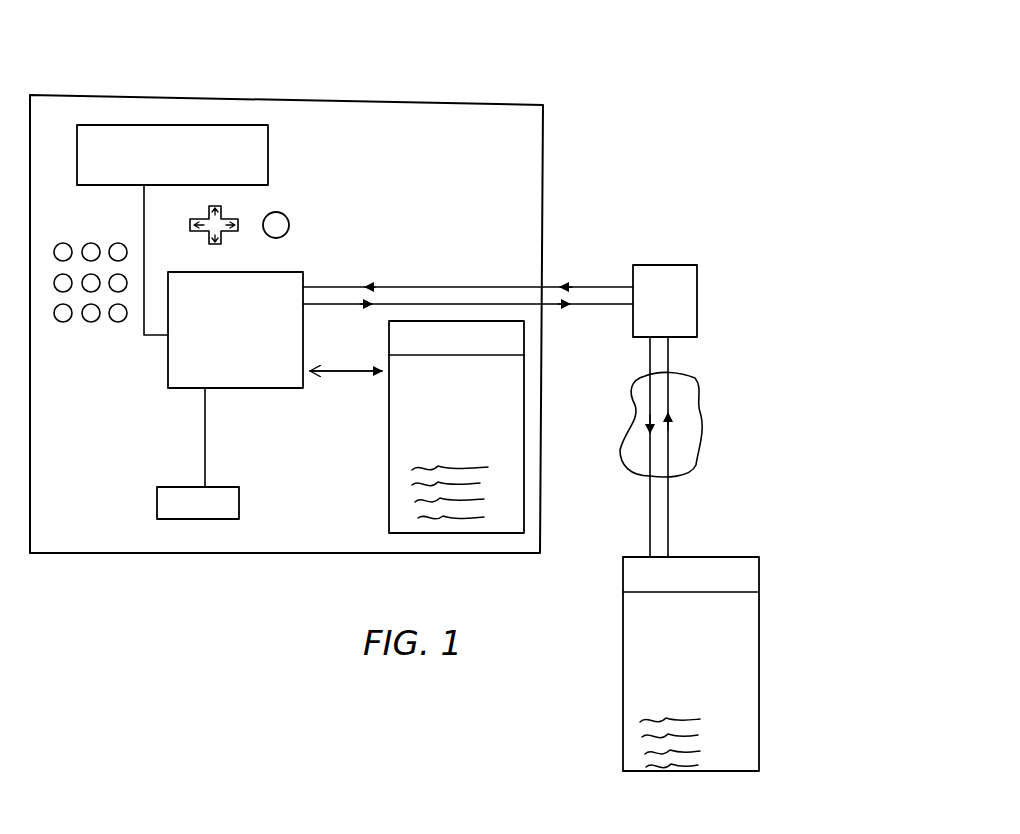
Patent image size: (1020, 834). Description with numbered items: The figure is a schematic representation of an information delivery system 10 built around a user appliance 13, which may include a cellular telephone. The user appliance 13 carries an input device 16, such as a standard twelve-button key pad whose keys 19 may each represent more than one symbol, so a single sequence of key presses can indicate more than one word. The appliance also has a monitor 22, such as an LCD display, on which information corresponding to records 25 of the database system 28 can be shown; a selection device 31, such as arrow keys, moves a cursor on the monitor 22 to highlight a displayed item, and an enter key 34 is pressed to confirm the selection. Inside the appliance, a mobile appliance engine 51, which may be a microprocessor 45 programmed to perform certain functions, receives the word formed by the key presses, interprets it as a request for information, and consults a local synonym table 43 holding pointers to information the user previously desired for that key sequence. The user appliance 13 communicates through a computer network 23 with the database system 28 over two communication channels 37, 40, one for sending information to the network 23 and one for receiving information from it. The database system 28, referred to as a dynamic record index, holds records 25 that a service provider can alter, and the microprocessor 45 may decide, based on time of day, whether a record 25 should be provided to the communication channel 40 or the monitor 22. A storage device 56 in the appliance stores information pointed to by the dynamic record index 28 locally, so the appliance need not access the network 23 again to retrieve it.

The information delivery system 10 is at (588, 112).
The user appliance 13 is at (476, 103).
The monitor 22 is at (270, 143).
The keys 19 is at (91, 243).
The input device 16 is at (82, 373).
The selection device 31 is at (197, 236).
The enter key 34 is at (290, 220).
The mobile appliance engine 51 is at (262, 390).
The storage device 56 is at (157, 509).
The communication channel 40 is at (440, 286).
The communication channel 37 is at (333, 306).
The local synonym table 43 is at (389, 490).
The microprocessor 45 is at (700, 284).
The computer network 23 is at (704, 398).
The database system 28 is at (759, 611).
The records 25 is at (712, 730).